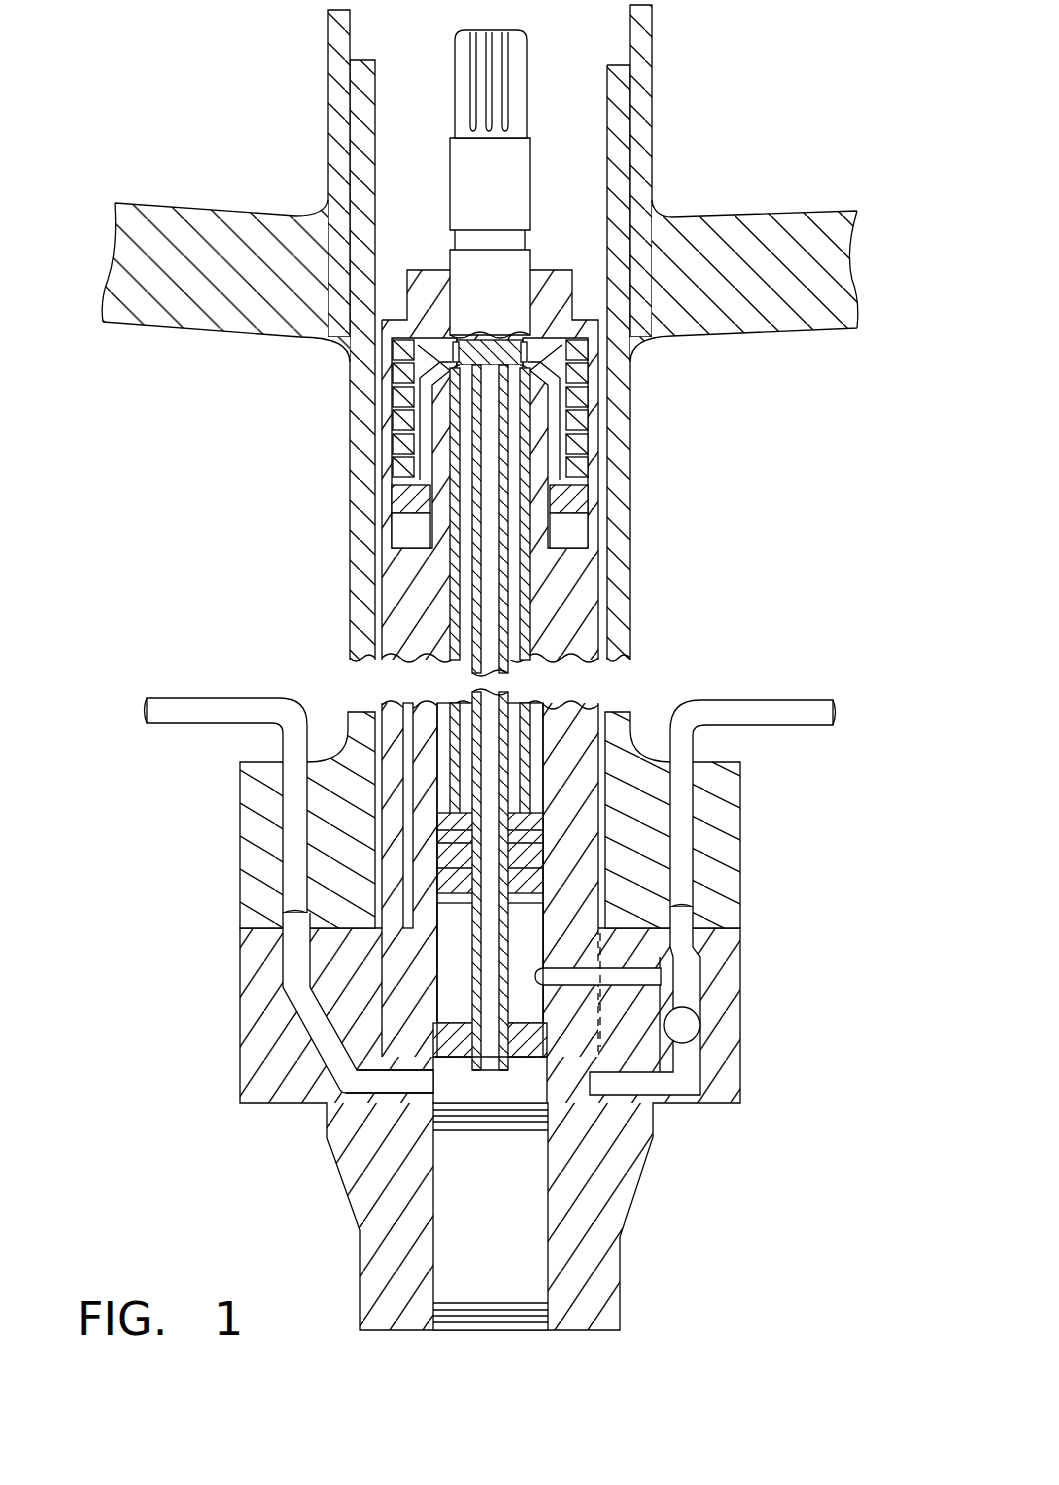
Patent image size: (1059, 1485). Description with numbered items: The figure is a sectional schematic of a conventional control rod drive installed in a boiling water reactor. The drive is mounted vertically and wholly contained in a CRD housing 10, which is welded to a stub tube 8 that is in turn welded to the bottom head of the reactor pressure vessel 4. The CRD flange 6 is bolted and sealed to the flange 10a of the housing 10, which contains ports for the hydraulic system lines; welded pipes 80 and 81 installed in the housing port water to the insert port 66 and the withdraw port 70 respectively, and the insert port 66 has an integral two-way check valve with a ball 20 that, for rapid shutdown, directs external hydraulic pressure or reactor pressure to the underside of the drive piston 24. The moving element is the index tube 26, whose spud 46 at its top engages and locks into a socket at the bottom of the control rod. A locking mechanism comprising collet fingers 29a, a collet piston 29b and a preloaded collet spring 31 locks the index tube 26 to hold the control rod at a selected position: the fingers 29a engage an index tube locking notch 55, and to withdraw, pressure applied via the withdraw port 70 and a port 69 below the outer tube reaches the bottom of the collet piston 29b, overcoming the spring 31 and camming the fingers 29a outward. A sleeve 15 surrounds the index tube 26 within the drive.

The reactor pressure vessel 4 is at (247, 208).
The CRD flange 6 is at (620, 1268).
The stub tube 8 is at (653, 110).
The CRD housing 10 is at (365, 607).
The flange of the CRD housing 10a is at (735, 893).
The sleeve 15 is at (510, 590).
The ball 20 is at (700, 1022).
The drive piston 24 is at (530, 868).
The index tube 26 is at (533, 633).
The collet fingers 29a is at (578, 370).
The collet piston 29b is at (400, 497).
The collet spring 31 is at (393, 447).
The spud 46 is at (530, 50).
The index tube locking notch 55 is at (528, 720).
The insert port 66 is at (690, 930).
The port 69 is at (340, 1113).
The withdraw port 70 is at (300, 957).
The welded pipe 80 is at (778, 700).
The welded pipe 81 is at (185, 698).